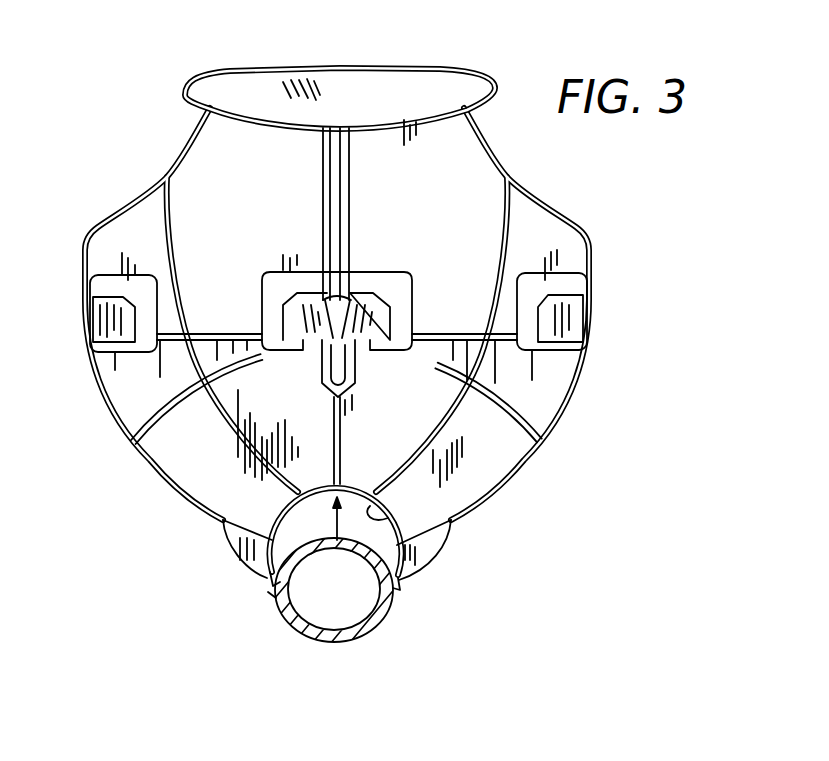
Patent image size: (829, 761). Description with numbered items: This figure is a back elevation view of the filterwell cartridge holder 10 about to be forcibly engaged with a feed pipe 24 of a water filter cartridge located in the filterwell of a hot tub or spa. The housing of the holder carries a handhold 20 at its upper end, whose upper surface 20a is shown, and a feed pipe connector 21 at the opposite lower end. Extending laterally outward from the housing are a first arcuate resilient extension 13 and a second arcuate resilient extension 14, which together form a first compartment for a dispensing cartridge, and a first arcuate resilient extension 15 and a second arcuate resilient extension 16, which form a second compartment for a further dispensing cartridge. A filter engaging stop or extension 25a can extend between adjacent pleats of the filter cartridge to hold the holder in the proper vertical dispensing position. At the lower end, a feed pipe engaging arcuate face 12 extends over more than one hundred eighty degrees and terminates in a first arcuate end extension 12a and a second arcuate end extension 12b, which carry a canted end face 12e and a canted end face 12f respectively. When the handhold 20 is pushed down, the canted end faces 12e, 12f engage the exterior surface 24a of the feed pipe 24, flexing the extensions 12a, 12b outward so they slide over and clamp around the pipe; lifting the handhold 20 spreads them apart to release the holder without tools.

The filterwell cartridge holder 10 is at (170, 60).
The handhold 20 is at (417, 72).
The upper surface of ring 20a is at (258, 95).
The second arcuate resilient extension 14 is at (392, 299).
The first arcuate resilient extension 15 is at (297, 320).
The second arcuate resilient extension 16 is at (110, 322).
The first arcuate resilient extension 13 is at (560, 325).
The filter engaging stop or extension 25a is at (352, 357).
The feed pipe engaging arcuate face 12 is at (405, 531).
The first arcuate end extension 12a is at (280, 550).
The second arcuate end extension 12b is at (398, 545).
The canted end face 12e is at (270, 583).
The canted end face 12f is at (403, 580).
The feed pipe connector 21 is at (254, 603).
The feed pipe 24 is at (383, 622).
The exterior surface of the feed pipe 24a is at (330, 642).